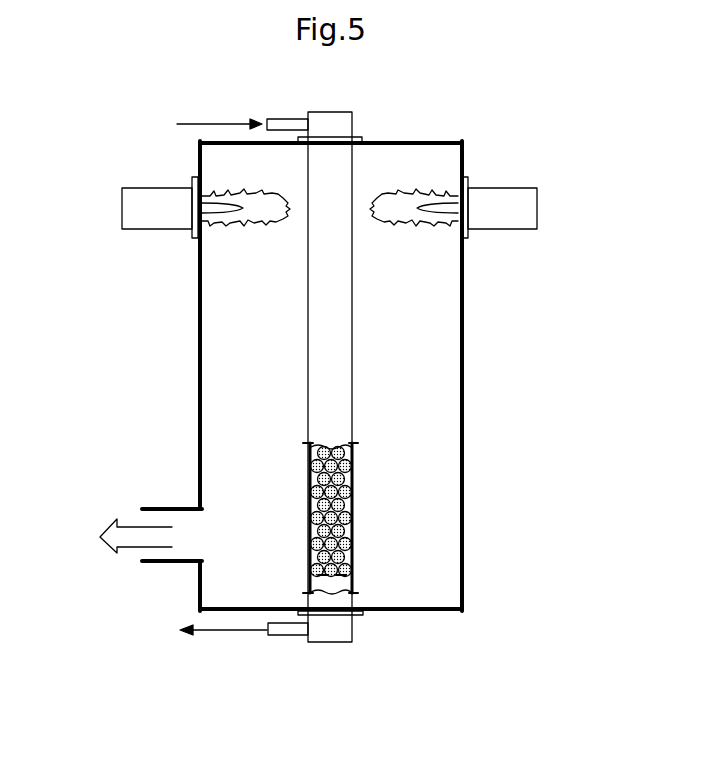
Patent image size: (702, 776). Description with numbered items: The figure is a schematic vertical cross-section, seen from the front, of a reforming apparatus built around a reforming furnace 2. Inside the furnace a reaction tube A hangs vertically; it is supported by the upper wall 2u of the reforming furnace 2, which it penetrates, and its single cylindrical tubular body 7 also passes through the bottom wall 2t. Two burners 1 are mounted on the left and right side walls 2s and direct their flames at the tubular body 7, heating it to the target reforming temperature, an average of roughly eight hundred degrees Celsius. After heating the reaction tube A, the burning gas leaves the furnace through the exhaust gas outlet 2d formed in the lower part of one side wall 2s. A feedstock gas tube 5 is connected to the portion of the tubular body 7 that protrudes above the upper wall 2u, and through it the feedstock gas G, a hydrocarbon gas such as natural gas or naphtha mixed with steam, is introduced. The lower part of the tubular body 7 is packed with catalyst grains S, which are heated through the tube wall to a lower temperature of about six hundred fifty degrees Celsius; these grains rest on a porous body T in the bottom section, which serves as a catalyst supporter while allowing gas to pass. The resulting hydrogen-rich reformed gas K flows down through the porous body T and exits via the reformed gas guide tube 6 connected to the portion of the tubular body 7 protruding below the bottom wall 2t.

The burner 1 is at (150, 229).
The reforming furnace 2 is at (328, 382).
The upper wall 2u is at (412, 142).
The side wall 2s is at (198, 415).
The exhaust gas outlet 2d is at (170, 507).
The bottom wall 2t is at (398, 612).
The feedstock gas tube 5 is at (290, 119).
The reformed gas guide tube 6 is at (290, 637).
The tubular body 7 is at (347, 402).
The reaction tube A is at (307, 295).
The feedstock gas G is at (207, 125).
The reformed gas K is at (212, 632).
The catalyst grains S is at (310, 465).
The porous body T is at (333, 577).